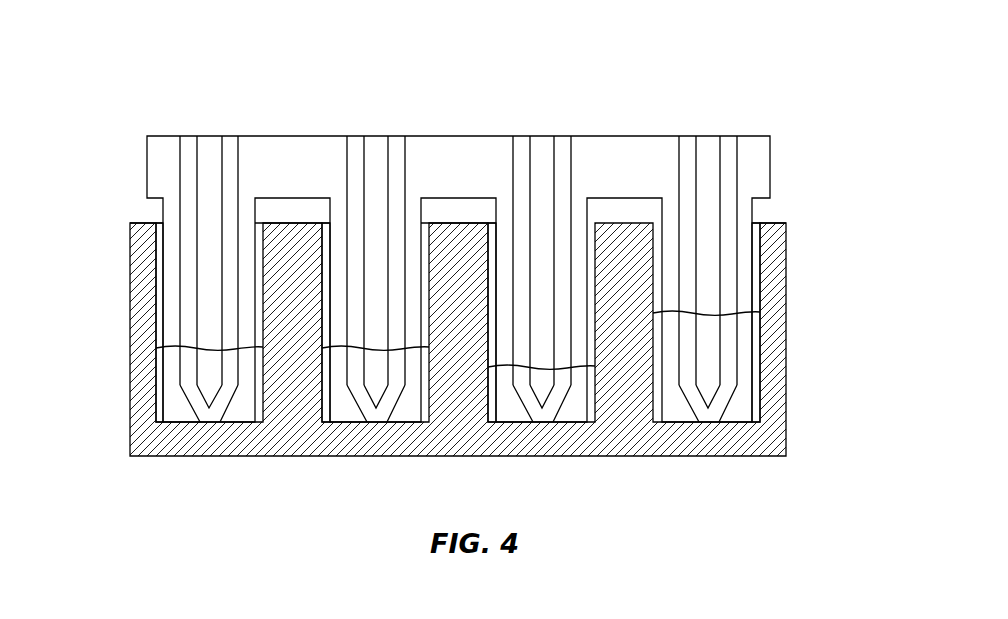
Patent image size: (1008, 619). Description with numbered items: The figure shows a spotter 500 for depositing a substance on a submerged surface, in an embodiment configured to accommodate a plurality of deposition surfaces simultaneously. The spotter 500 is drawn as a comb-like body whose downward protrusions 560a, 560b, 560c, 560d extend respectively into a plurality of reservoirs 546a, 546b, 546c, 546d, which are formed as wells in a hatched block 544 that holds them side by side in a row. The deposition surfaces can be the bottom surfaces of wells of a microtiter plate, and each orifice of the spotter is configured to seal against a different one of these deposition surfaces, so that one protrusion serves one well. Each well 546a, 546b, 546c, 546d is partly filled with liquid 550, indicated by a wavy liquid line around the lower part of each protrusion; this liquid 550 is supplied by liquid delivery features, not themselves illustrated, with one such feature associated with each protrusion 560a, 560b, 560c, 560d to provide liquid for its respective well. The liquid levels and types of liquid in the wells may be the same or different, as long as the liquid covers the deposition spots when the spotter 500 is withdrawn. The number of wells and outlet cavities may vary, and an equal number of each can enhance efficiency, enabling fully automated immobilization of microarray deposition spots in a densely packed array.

The spotter 500 is at (310, 56).
The substrate 544 is at (788, 252).
The reservoir 546a is at (153, 215).
The reservoir 546b is at (322, 210).
The reservoir 546c is at (489, 213).
The reservoir 546d is at (764, 215).
The liquid 550 is at (172, 365).
The protrusion 560a is at (162, 398).
The protrusion 560b is at (328, 407).
The protrusion 560c is at (493, 407).
The protrusion 560d is at (753, 402).